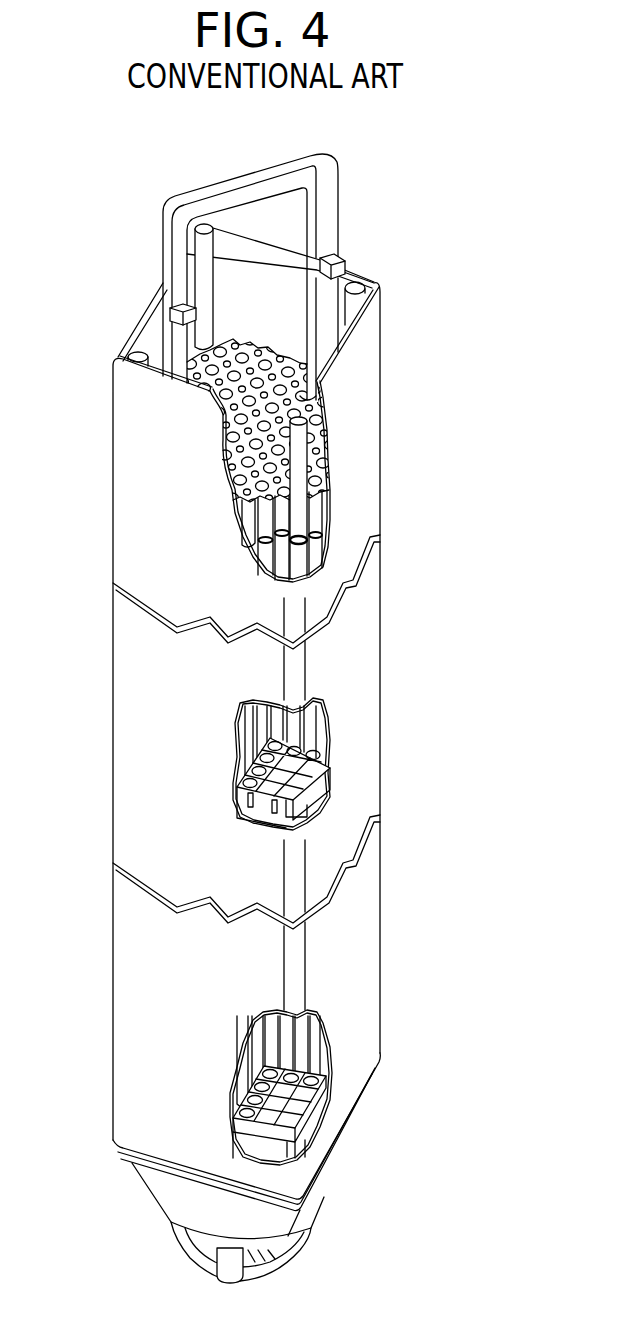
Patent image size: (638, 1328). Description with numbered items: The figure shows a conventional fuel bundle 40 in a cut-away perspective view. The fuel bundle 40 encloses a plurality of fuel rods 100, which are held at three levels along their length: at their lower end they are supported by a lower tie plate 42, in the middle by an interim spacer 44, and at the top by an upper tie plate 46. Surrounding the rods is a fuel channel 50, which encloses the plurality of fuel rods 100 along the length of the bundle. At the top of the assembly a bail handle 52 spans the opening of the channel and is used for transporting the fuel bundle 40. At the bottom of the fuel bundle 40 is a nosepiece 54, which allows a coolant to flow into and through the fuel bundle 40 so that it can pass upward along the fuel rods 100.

The fuel bundle 40 is at (420, 270).
The lower tie plate 42 is at (302, 1149).
The interim spacer 44 is at (242, 803).
The upper tie plate 46 is at (238, 486).
The fuel channel 50 is at (382, 953).
The bail handle 52 is at (159, 225).
The nosepiece 54 is at (306, 1243).
The fuel rods 100 is at (310, 559).